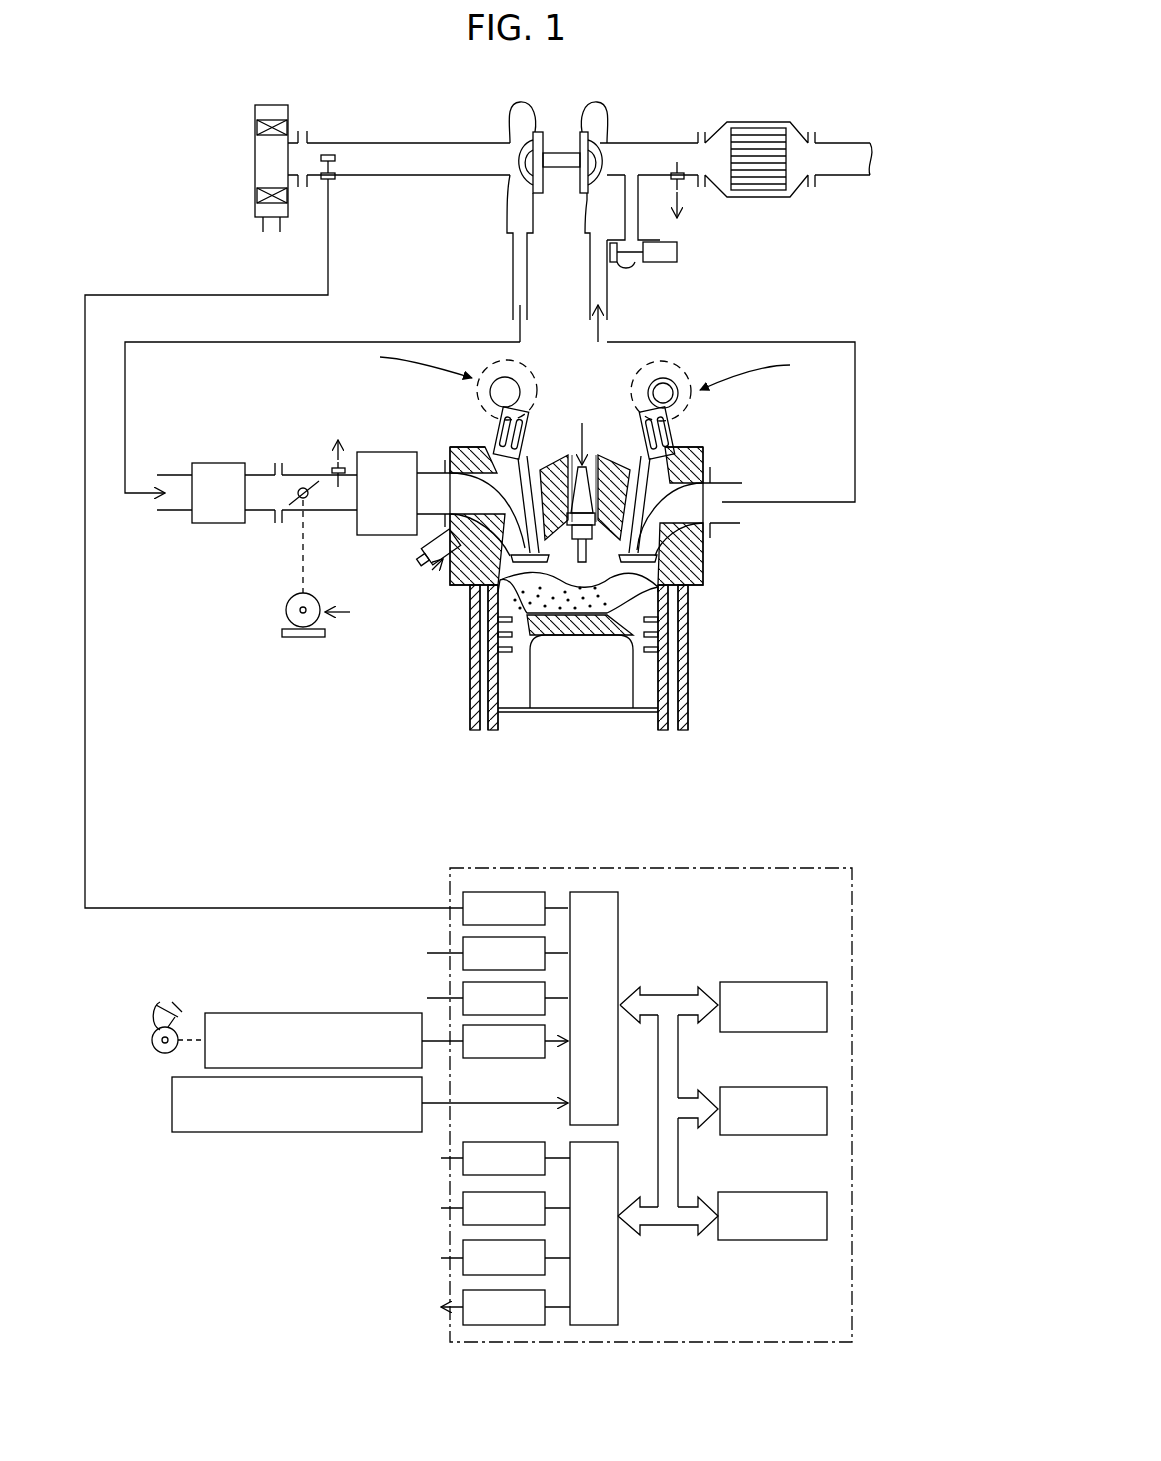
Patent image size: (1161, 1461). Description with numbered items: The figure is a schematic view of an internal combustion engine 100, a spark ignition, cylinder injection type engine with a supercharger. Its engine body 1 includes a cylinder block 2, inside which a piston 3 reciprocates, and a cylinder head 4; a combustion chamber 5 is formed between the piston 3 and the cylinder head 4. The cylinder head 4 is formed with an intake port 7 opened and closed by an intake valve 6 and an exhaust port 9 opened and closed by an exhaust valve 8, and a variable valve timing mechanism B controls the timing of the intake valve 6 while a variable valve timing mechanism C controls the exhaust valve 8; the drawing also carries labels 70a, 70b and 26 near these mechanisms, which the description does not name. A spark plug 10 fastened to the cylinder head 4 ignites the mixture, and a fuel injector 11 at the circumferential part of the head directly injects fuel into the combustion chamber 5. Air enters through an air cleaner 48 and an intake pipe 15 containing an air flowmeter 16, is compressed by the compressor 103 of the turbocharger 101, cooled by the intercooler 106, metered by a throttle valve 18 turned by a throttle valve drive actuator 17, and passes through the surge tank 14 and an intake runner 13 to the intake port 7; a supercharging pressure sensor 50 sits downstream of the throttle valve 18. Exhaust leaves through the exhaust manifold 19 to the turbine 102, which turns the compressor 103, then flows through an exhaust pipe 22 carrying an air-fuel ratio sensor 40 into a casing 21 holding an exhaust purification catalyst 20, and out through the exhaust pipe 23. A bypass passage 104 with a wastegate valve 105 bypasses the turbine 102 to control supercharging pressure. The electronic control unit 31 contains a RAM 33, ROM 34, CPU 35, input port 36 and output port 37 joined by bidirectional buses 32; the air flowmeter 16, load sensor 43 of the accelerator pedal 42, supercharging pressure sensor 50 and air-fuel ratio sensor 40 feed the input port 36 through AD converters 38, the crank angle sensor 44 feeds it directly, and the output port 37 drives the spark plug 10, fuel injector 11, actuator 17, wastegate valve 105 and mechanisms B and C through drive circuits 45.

The engine body 1 is at (468, 680).
The cylinder block 2 is at (684, 660).
The piston 3 is at (520, 655).
The cylinder head 4 is at (706, 548).
The combustion chamber 5 is at (630, 578).
The intake valve 6 is at (528, 455).
The intake port 7 is at (475, 470).
The exhaust valve 8 is at (690, 455).
The exhaust port 9 is at (715, 490).
The spark plug 10 is at (585, 478).
The fuel injector 11 is at (436, 578).
The intake runner 13 is at (432, 483).
The surge tank 14 is at (385, 535).
The intake pipe 15 is at (420, 141).
The air flowmeter 16 is at (326, 143).
The throttle valve drive actuator 17 is at (284, 610).
The throttle valve 18 is at (322, 500).
The exhaust manifold 19 is at (588, 282).
The exhaust purification catalyst 20 is at (760, 125).
The casing 21 is at (760, 200).
The exhaust pipe 22 is at (650, 143).
The exhaust pipe 23 is at (840, 143).
The exhaust cam 26 is at (640, 403).
The electronic control unit 31 is at (858, 952).
The bidirectional bus 32 is at (670, 995).
The RAM 33 is at (792, 982).
The ROM 34 is at (792, 1087).
The CPU 35 is at (778, 1192).
The input port 36 is at (618, 897).
The output port 37 is at (618, 1300).
The AD converter 38 is at (440, 1035).
The air-fuel ratio sensor 40 is at (688, 186).
The accelerator pedal 42 is at (163, 1003).
The load sensor 43 is at (278, 1013).
The crank angle sensor 44 is at (290, 1132).
The drive circuit 45 is at (438, 1305).
The air cleaner 48 is at (258, 150).
The supercharging pressure sensor 50 is at (335, 460).
The intake cam 70a is at (508, 392).
The exhaust cam 70b is at (665, 392).
The internal combustion engine 100 is at (782, 707).
The turbocharger 101 is at (556, 180).
The turbine 102 is at (600, 140).
The compressor 103 is at (522, 140).
The bypass passage 104 is at (660, 235).
The wastegate valve 105 is at (630, 265).
The intercooler 106 is at (220, 463).
The variable valve timing mechanism B is at (416, 363).
The variable valve timing mechanism C is at (754, 373).